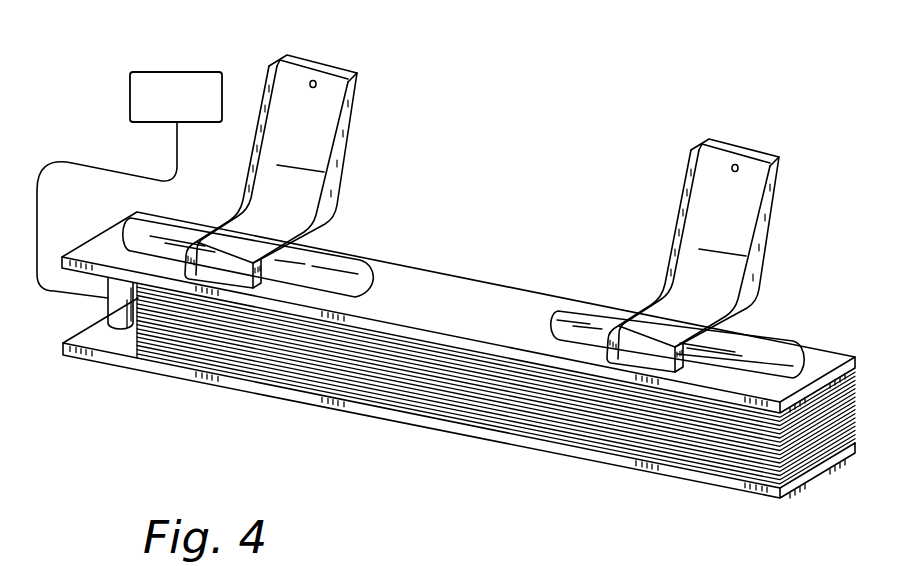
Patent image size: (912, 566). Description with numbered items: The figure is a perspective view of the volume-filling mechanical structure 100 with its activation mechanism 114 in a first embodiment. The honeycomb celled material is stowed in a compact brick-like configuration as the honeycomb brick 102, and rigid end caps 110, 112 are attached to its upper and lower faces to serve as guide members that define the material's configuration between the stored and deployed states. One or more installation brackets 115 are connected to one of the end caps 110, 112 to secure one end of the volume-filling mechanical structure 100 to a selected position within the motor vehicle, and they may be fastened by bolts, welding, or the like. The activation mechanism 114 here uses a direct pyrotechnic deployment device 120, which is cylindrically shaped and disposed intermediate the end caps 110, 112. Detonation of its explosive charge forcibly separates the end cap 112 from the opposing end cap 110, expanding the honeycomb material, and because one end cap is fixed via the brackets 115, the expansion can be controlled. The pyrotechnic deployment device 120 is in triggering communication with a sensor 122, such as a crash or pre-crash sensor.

The volume-filling mechanical structure 100 is at (662, 105).
The honeycomb brick 102 is at (620, 425).
The end cap 110 is at (813, 360).
The end cap 112 is at (298, 398).
The activation mechanism 114 is at (72, 103).
The installation bracket 115 is at (350, 122).
The pyrotechnic deployment device 120 is at (107, 303).
The sensor 122 is at (178, 72).